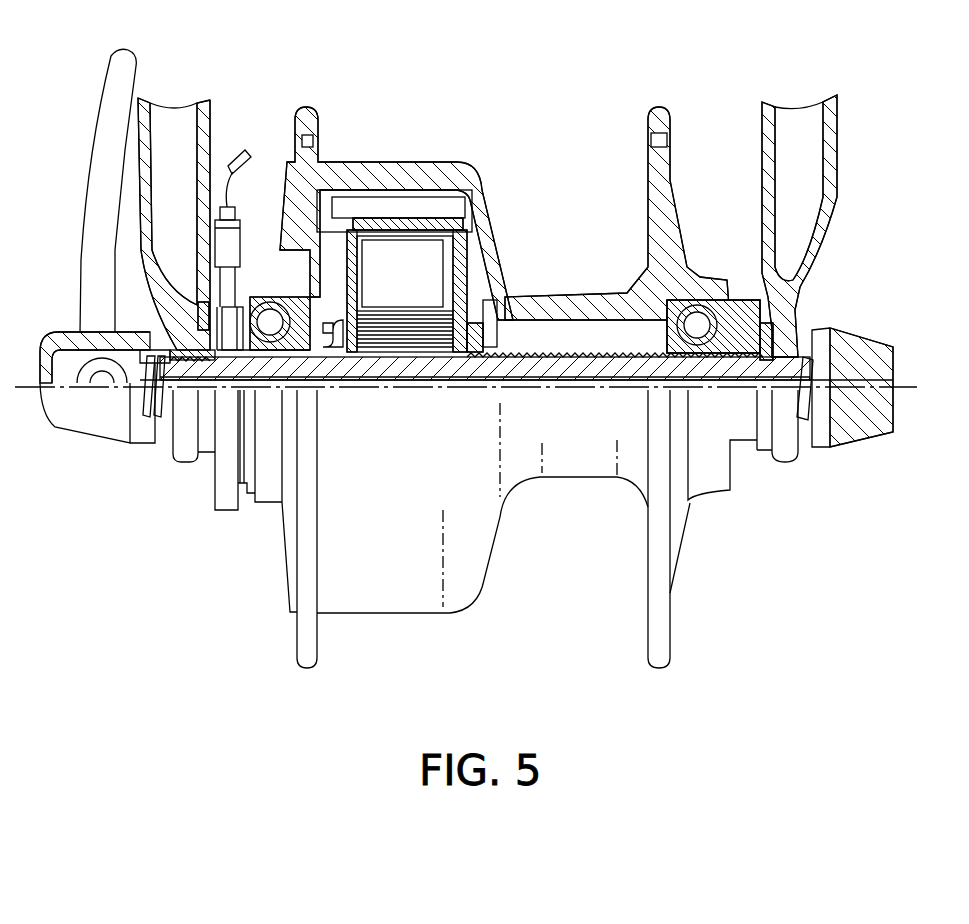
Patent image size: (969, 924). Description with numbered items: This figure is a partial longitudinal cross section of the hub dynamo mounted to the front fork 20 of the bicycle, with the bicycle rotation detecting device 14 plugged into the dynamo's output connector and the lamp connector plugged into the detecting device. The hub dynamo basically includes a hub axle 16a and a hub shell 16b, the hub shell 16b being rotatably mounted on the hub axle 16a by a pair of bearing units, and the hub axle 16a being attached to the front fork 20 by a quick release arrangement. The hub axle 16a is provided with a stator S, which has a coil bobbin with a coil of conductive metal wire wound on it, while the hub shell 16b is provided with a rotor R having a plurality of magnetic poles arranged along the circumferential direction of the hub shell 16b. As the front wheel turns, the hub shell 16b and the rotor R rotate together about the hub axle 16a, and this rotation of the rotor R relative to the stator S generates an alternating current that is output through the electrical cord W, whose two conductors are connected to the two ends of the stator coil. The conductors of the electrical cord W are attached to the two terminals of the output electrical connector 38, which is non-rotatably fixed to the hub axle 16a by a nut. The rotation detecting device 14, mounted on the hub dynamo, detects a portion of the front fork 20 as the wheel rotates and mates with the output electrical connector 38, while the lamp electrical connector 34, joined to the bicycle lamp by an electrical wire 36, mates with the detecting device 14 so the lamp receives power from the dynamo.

The bicycle rotation detecting device 14 is at (205, 276).
The hub axle 16a is at (148, 388).
The hub shell 16b is at (470, 173).
The front fork 20 is at (211, 137).
The lamp electrical connector 34 is at (243, 242).
The electrical wire 36 is at (250, 166).
The output electrical connector 38 is at (201, 310).
The rotor R is at (457, 205).
The stator S is at (468, 272).
The electrical cord W is at (262, 352).